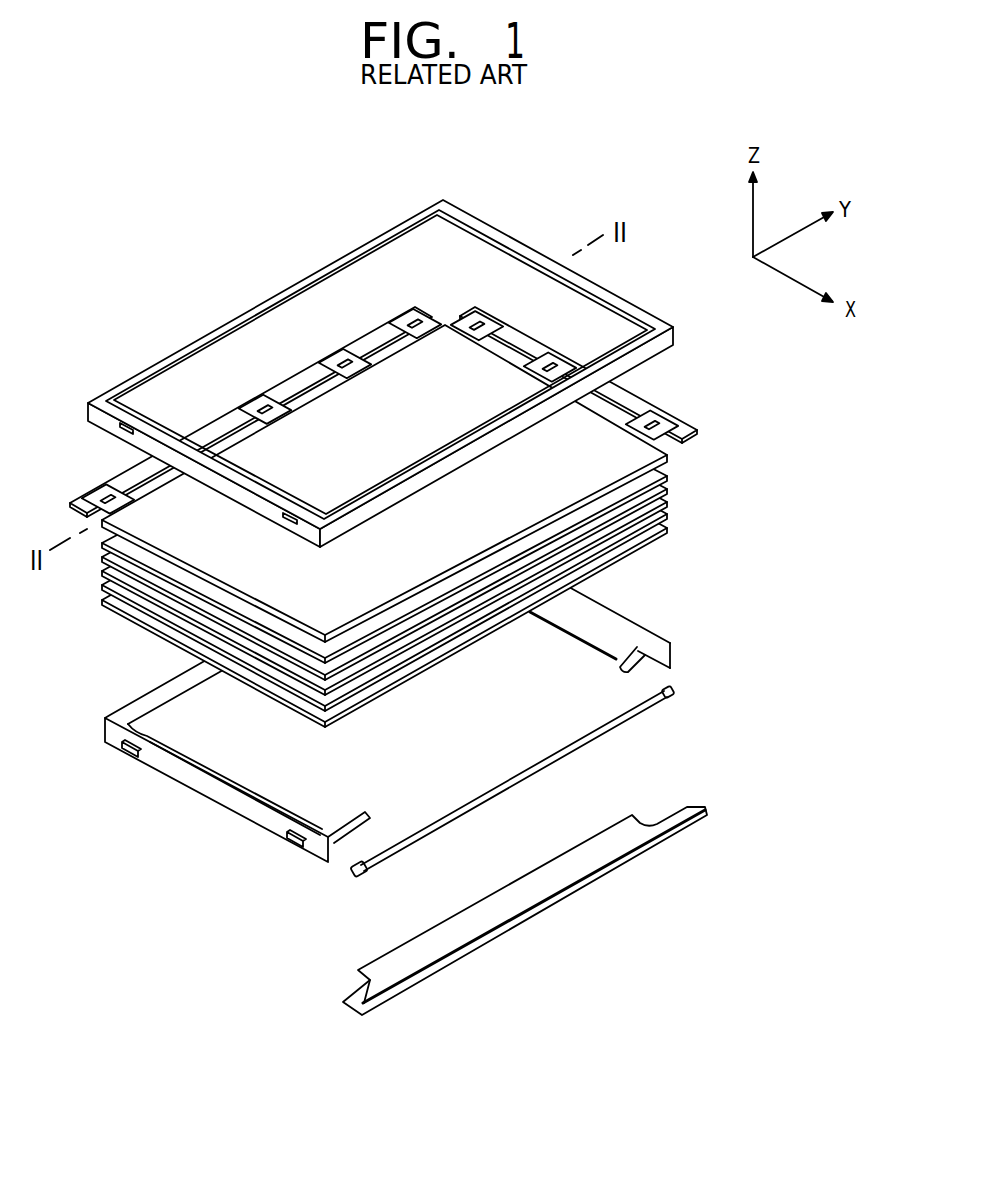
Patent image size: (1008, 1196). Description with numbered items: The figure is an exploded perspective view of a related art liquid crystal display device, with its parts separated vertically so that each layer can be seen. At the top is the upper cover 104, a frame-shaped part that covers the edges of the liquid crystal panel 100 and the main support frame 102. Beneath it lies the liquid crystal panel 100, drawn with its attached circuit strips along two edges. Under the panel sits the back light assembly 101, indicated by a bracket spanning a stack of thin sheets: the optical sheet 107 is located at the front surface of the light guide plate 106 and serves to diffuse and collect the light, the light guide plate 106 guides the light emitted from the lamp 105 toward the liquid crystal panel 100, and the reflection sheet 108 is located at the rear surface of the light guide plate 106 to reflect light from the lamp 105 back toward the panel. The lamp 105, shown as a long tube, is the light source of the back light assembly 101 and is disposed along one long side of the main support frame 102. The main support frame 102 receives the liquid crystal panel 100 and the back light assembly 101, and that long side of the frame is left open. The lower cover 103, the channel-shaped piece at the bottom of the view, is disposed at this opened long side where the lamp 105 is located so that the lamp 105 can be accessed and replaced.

The liquid crystal panel 100 is at (600, 427).
The back light assembly 101 is at (448, 544).
The main support frame 102 is at (247, 810).
The lower cover 103 is at (707, 817).
The upper cover 104 is at (640, 312).
The lamp 105 is at (522, 770).
The light guide plate 106 is at (663, 522).
The optical sheet 107 is at (410, 528).
The reflection sheet 108 is at (657, 548).